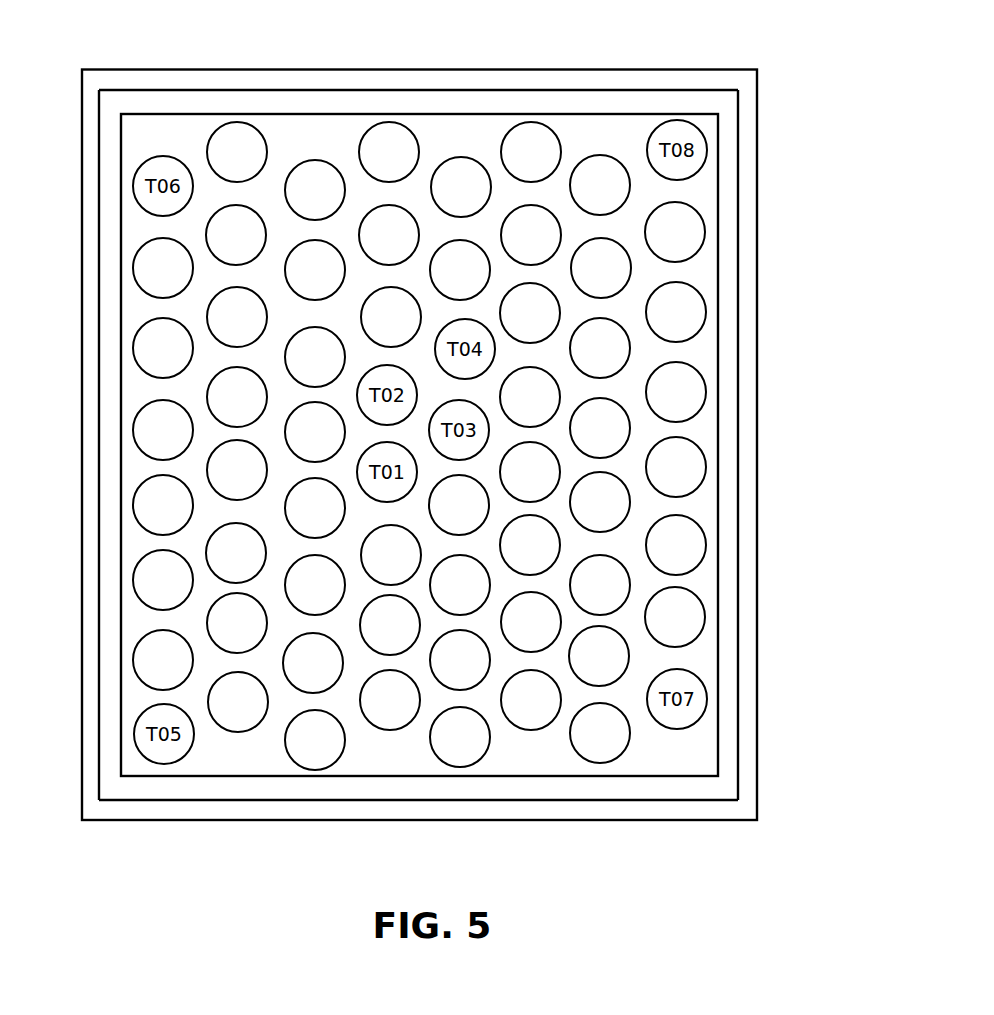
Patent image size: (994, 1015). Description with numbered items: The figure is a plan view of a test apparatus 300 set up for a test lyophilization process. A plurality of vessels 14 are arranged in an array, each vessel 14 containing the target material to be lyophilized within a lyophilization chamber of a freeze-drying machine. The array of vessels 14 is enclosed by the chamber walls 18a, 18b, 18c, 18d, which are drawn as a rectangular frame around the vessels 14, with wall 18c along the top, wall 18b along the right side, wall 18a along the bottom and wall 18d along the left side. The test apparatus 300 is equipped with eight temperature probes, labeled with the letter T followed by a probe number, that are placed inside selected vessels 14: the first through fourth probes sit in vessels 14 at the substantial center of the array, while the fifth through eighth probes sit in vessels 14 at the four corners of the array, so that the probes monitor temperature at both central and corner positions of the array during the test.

The test apparatus 300 is at (654, 90).
The vessel 14 is at (562, 135).
The wall of the chamber 18a is at (658, 800).
The wall of the chamber 18b is at (728, 747).
The wall of the chamber 18c is at (409, 90).
The wall of the chamber 18d is at (100, 296).